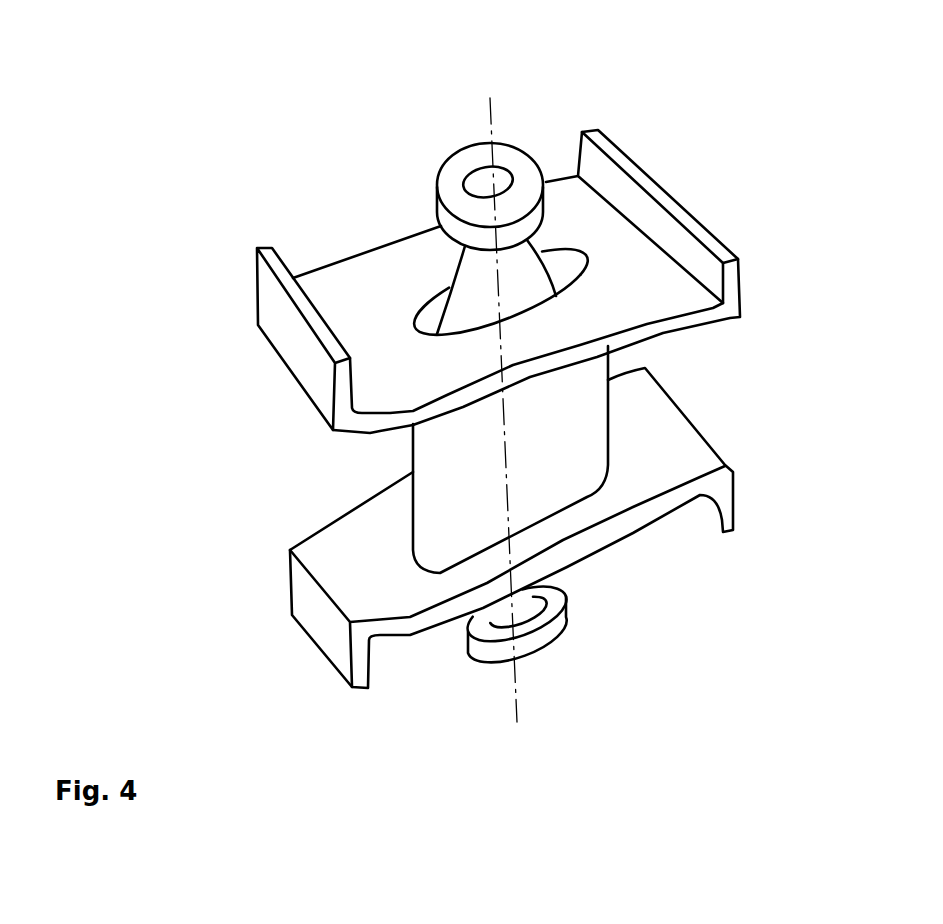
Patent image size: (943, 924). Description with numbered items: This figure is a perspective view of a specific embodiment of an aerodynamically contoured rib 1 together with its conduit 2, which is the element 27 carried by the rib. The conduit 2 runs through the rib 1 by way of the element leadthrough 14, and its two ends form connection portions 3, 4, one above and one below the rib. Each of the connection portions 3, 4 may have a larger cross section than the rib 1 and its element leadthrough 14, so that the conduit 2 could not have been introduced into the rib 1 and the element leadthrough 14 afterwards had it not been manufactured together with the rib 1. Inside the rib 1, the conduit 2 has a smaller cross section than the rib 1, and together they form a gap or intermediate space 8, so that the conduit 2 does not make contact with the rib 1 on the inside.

The rib 1 is at (383, 333).
The conduit 2 is at (532, 266).
The connection portion 3 is at (521, 145).
The connection portion 4 is at (557, 628).
The gap or intermediate space 8 is at (557, 267).
The element leadthrough 14 is at (592, 263).
The element 27 is at (463, 298).